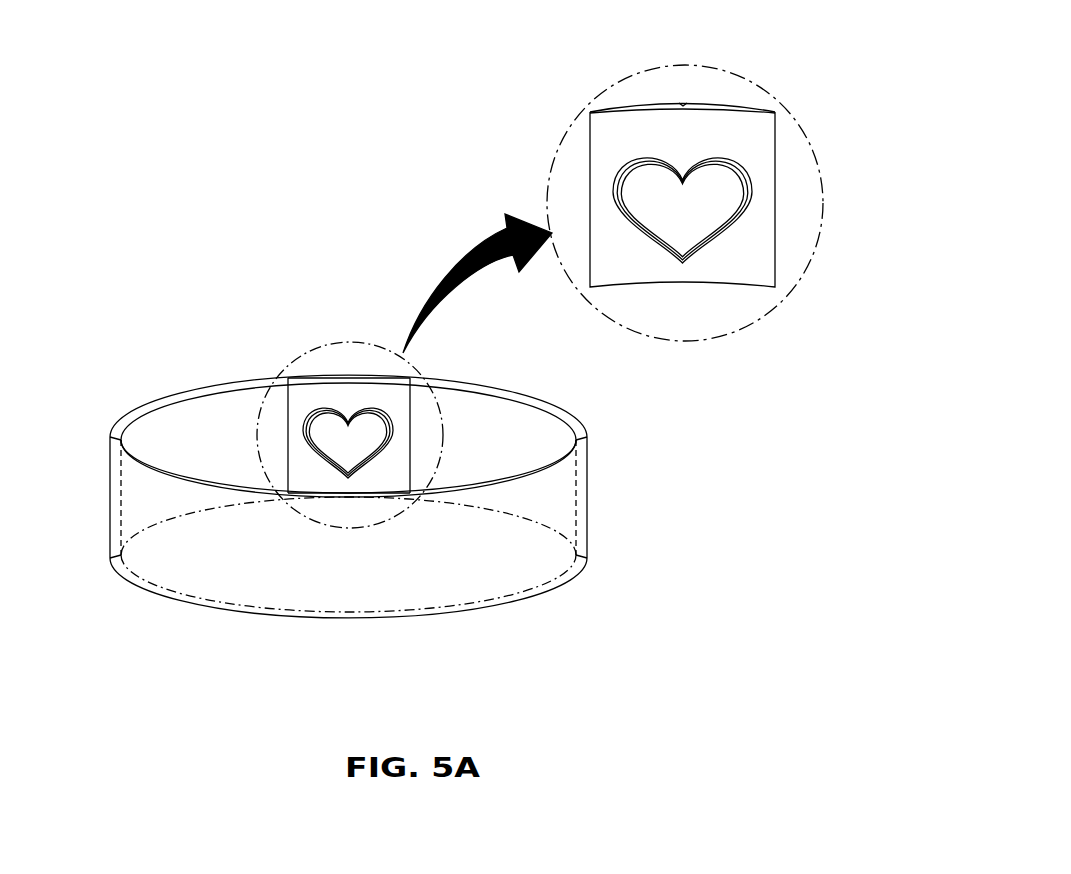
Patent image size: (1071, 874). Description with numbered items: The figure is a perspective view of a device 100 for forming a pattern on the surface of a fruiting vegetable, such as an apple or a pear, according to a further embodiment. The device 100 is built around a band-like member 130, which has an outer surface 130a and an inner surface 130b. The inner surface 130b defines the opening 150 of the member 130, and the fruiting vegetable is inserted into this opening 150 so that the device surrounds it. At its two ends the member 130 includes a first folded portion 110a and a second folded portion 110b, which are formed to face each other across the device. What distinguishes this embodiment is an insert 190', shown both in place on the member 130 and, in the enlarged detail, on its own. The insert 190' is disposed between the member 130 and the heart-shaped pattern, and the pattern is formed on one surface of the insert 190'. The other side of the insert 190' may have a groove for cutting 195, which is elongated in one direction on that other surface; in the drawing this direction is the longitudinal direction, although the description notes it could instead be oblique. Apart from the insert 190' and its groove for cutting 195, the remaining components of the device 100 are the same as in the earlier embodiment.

The device for forming a pattern on a surface of a fruiting vegetable 100 is at (133, 392).
The first folded portion 110a is at (108, 490).
The second folded portion 110b is at (588, 490).
The member 130 is at (488, 376).
The outer surface 130a is at (449, 578).
The inner surface 130b is at (275, 403).
The opening 150 is at (211, 433).
The insert 190' is at (651, 152).
The groove for cutting 195 is at (683, 104).